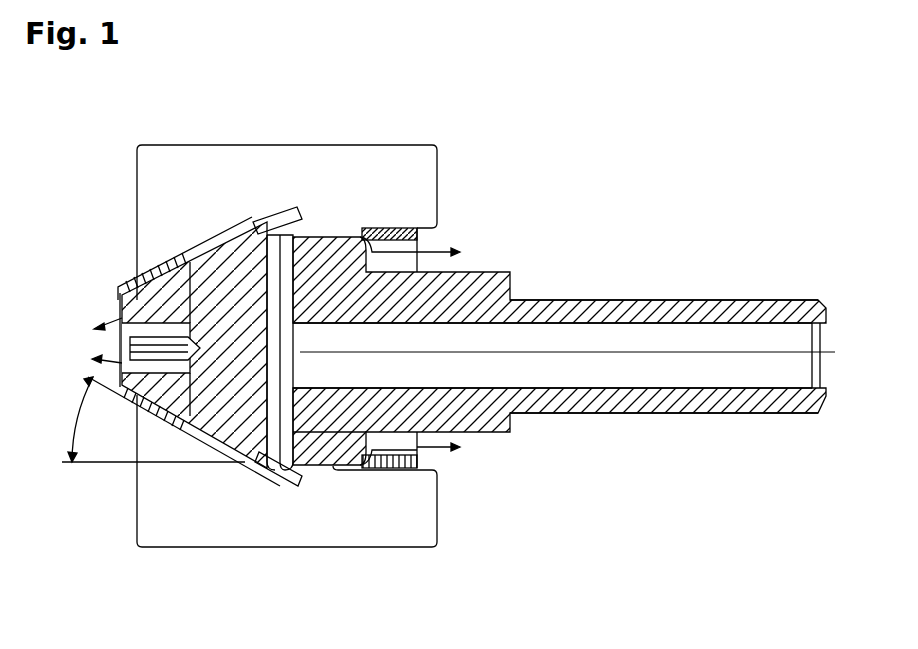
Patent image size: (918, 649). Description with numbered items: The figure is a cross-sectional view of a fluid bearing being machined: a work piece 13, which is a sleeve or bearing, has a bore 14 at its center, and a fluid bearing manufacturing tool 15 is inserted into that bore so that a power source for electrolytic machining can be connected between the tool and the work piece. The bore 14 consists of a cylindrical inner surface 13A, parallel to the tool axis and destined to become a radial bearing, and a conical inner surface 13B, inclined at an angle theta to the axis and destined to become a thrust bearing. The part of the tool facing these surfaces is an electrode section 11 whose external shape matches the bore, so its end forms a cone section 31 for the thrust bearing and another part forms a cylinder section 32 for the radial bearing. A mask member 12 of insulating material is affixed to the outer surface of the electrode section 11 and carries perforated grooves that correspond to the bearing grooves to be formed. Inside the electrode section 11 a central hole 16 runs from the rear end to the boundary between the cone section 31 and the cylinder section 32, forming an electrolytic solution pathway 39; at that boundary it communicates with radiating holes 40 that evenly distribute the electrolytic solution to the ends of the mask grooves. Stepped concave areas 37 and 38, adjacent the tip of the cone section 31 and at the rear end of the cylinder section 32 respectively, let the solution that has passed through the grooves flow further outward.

The electrode section 11 is at (497, 286).
The mask member 12 is at (420, 228).
The work piece 13 is at (300, 158).
The cylindrical inner surface 13A is at (338, 226).
The conical inner surface 13B is at (150, 300).
The bore 14 is at (431, 236).
The fluid bearing manufacturing tool 15 is at (654, 297).
The central hole 16 is at (780, 323).
The cone section 31 is at (240, 443).
The cylinder section 32 is at (328, 450).
The concave area 37 is at (170, 308).
The concave area 38 is at (417, 452).
The electrolytic solution pathway 39 is at (700, 378).
The holes 40 is at (300, 242).